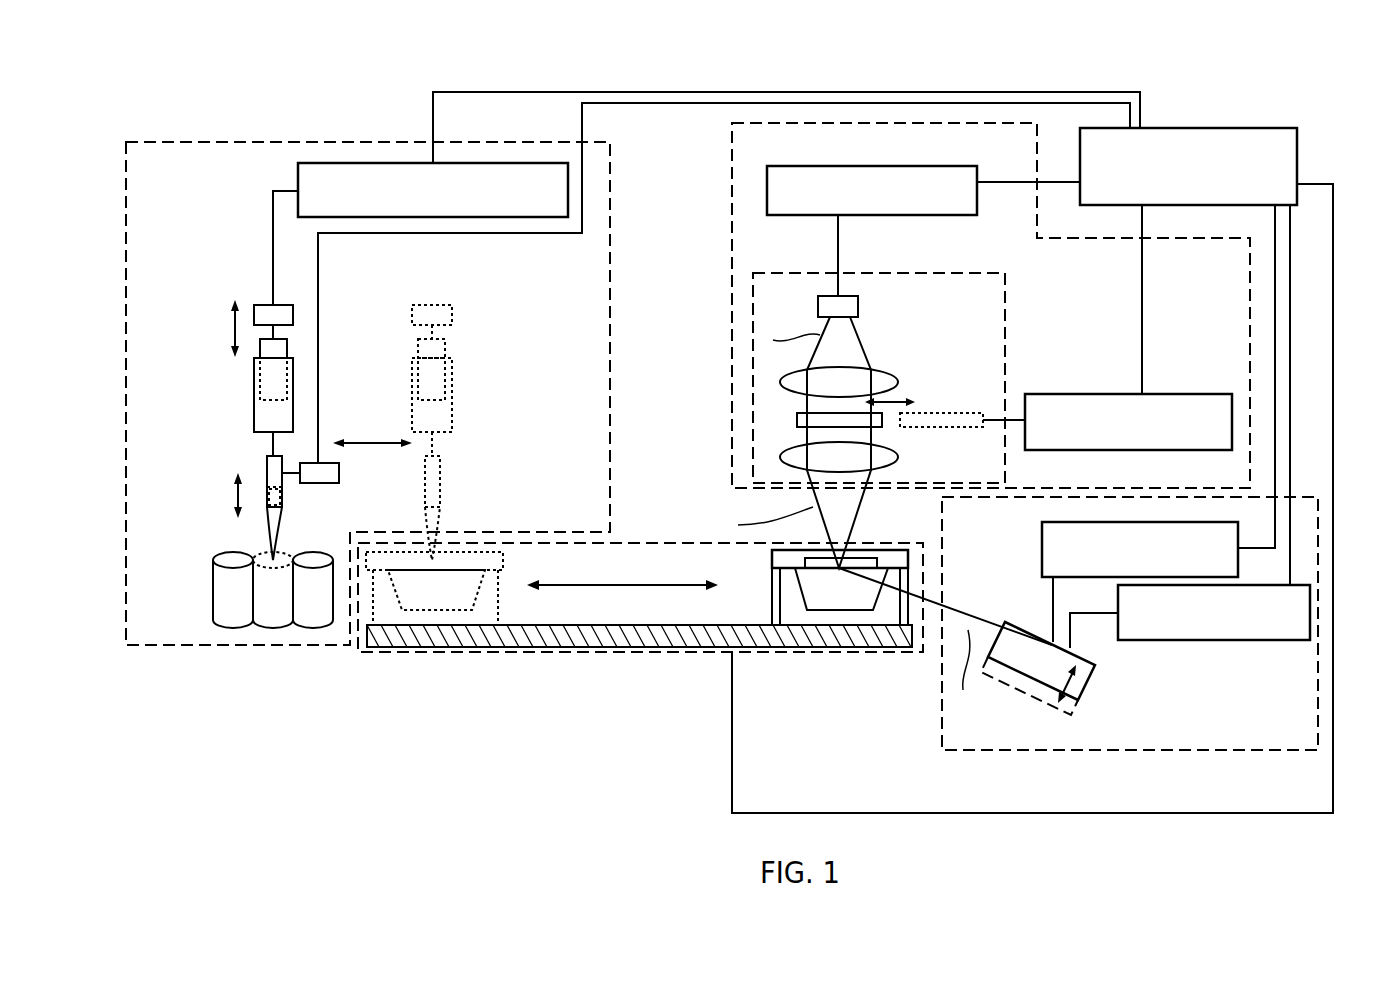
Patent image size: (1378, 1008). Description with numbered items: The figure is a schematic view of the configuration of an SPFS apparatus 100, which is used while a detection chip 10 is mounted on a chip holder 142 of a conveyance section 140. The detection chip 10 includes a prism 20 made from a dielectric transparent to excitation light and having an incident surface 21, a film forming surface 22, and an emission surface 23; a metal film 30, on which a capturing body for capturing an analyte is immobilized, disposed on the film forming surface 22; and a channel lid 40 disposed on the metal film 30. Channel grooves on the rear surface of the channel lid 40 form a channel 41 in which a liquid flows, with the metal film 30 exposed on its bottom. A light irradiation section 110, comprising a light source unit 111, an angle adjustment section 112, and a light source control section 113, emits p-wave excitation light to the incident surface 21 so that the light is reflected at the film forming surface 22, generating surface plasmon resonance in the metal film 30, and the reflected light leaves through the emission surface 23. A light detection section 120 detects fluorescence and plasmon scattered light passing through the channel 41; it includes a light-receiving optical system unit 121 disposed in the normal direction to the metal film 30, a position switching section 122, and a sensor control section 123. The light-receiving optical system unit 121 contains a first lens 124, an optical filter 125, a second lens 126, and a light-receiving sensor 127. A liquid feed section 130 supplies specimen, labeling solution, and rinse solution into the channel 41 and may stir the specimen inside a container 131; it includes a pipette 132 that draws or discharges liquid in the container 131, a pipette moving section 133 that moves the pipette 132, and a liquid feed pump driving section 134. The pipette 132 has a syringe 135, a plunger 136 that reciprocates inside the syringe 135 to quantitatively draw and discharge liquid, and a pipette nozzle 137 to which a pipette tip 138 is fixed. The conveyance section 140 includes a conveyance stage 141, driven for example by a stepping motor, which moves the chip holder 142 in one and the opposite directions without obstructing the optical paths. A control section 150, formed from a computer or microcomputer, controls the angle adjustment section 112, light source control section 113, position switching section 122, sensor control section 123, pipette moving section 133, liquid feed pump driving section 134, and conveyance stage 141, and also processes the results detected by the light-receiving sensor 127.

The SPFS apparatus 100 is at (1377, 63).
The detection chip 10 is at (878, 722).
The prism 20 is at (915, 680).
The incident surface 21 is at (887, 572).
The film forming surface 22 is at (828, 570).
The emission surface 23 is at (802, 604).
The metal film 30 is at (790, 578).
The channel lid 40 is at (783, 565).
The channel 41 is at (860, 560).
The light irradiation section 110 is at (1120, 752).
The light source unit 111 is at (1017, 672).
The angle adjustment section 112 is at (1042, 540).
The light source control section 113 is at (1183, 640).
The light detection section 120 is at (1005, 123).
The light-receiving optical system unit 121 is at (753, 273).
The position switching section 122 is at (1192, 394).
The sensor control section 123 is at (810, 166).
The first lens 124 is at (779, 457).
The optical filter 125 is at (797, 420).
The second lens 126 is at (779, 382).
The light-receiving sensor 127 is at (818, 305).
The liquid feed section 130 is at (273, 142).
The container 131 is at (218, 588).
The pipette 132 is at (190, 482).
The pipette moving section 133 is at (339, 480).
The liquid feed pump driving section 134 is at (535, 218).
The syringe 135 is at (254, 420).
The plunger 136 is at (258, 352).
The pipette nozzle 137 is at (267, 470).
The pipette tip 138 is at (270, 548).
The conveyance section 140 is at (668, 540).
The conveyance stage 141 is at (590, 625).
The chip holder 142 is at (780, 572).
The control section 150 is at (1287, 128).